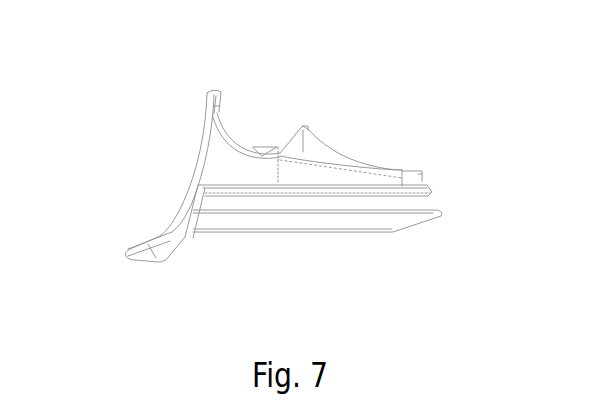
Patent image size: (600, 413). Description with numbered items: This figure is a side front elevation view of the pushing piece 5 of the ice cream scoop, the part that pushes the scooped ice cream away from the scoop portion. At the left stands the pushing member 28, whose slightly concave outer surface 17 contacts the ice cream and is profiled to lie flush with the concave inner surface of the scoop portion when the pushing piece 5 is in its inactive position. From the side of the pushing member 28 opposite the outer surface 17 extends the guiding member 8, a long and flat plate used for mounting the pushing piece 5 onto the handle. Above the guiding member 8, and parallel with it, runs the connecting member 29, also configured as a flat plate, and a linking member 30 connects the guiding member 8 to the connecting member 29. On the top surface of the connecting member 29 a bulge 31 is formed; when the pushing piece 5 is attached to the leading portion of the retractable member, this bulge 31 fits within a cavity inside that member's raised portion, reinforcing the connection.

The outer surface 17 is at (200, 148).
The pushing piece 5 is at (279, 105).
The bulge 31 is at (314, 141).
The connecting member 29 is at (330, 173).
The linking member 30 is at (292, 199).
The guiding member 8 is at (327, 220).
The pushing member 28 is at (185, 212).